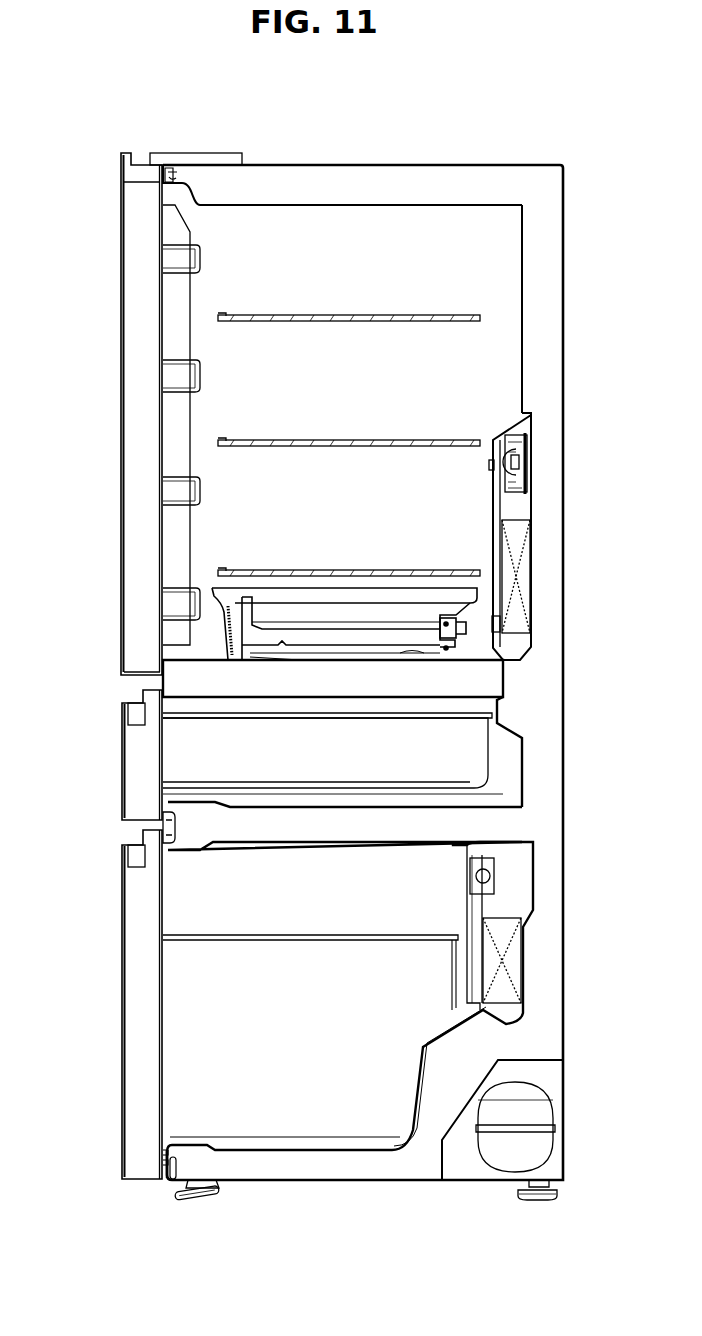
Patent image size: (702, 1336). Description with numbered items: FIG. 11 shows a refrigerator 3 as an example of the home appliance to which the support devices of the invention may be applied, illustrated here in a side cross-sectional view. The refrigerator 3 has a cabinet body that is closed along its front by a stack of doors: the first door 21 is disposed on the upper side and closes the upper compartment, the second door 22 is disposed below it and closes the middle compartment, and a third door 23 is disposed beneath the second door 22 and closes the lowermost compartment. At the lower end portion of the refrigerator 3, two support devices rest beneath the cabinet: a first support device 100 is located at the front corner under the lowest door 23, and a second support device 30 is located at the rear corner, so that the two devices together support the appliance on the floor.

The refrigerator cabinet 3 is at (372, 160).
The first door 21 is at (122, 620).
The second door 22 is at (122, 772).
The lower drawer door 23 is at (122, 1010).
The first support device 100 is at (208, 1203).
The second support device 30 is at (510, 1200).